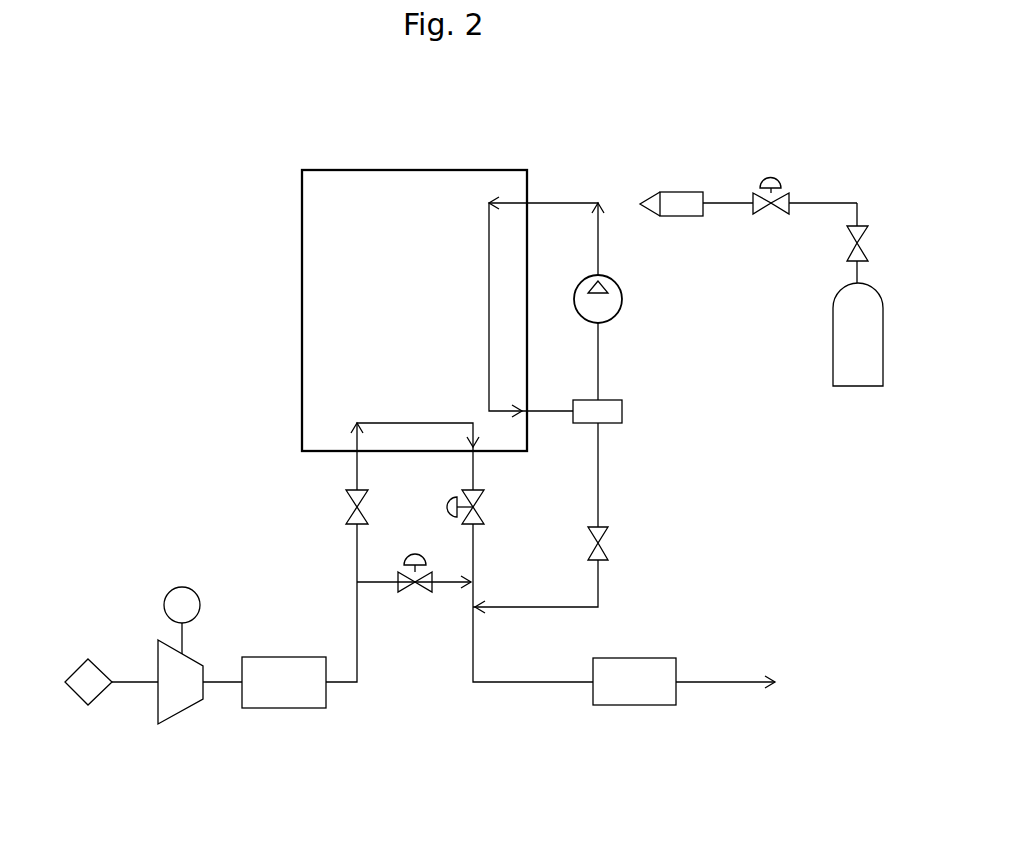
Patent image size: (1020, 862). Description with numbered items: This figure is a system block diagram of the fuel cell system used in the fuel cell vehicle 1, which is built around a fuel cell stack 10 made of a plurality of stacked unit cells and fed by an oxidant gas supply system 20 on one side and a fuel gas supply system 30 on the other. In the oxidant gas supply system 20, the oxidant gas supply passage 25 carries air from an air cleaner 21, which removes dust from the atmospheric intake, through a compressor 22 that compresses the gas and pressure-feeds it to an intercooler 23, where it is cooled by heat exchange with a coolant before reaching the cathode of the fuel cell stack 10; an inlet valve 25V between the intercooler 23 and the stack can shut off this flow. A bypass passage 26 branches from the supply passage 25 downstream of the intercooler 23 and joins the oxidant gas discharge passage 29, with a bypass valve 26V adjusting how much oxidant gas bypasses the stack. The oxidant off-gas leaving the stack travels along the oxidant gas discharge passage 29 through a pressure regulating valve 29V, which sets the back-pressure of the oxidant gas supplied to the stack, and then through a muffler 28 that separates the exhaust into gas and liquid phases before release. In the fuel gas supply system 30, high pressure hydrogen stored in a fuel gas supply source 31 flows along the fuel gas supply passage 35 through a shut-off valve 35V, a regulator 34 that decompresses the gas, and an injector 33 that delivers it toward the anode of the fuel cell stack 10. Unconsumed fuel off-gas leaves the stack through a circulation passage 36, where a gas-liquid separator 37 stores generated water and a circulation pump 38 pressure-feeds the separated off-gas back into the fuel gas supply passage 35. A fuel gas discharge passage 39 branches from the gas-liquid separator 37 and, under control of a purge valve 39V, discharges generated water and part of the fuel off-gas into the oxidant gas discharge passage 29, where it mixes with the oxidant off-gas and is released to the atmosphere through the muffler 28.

The fuel cell vehicle 1 is at (797, 122).
The fuel cell stack 10 is at (315, 170).
The oxidant gas supply system 20 is at (209, 572).
The air cleaner 21 is at (85, 663).
The compressor 22 is at (183, 708).
The intercooler 23 is at (290, 708).
The oxidant gas supply passage 25 is at (355, 604).
The inlet valve 25V is at (345, 510).
The bypass passage 26 is at (447, 584).
The bypass valve 26V is at (408, 594).
The muffler 28 is at (630, 706).
The oxidant gas discharge passage 29 is at (475, 644).
The pressure regulating valve 29V is at (484, 510).
The fuel gas supply system 30 is at (737, 418).
The fuel gas supply source 31 is at (833, 361).
The injector 33 is at (685, 192).
The regulator 34 is at (771, 216).
The fuel gas supply passage 35 is at (611, 200).
The shut-off valve 35V is at (847, 245).
The circulation passage 36 is at (600, 357).
The gas-liquid separator 37 is at (622, 412).
The circulation pump 38 is at (622, 300).
The fuel gas discharge passage 39 is at (600, 598).
The purge valve 39V is at (606, 545).